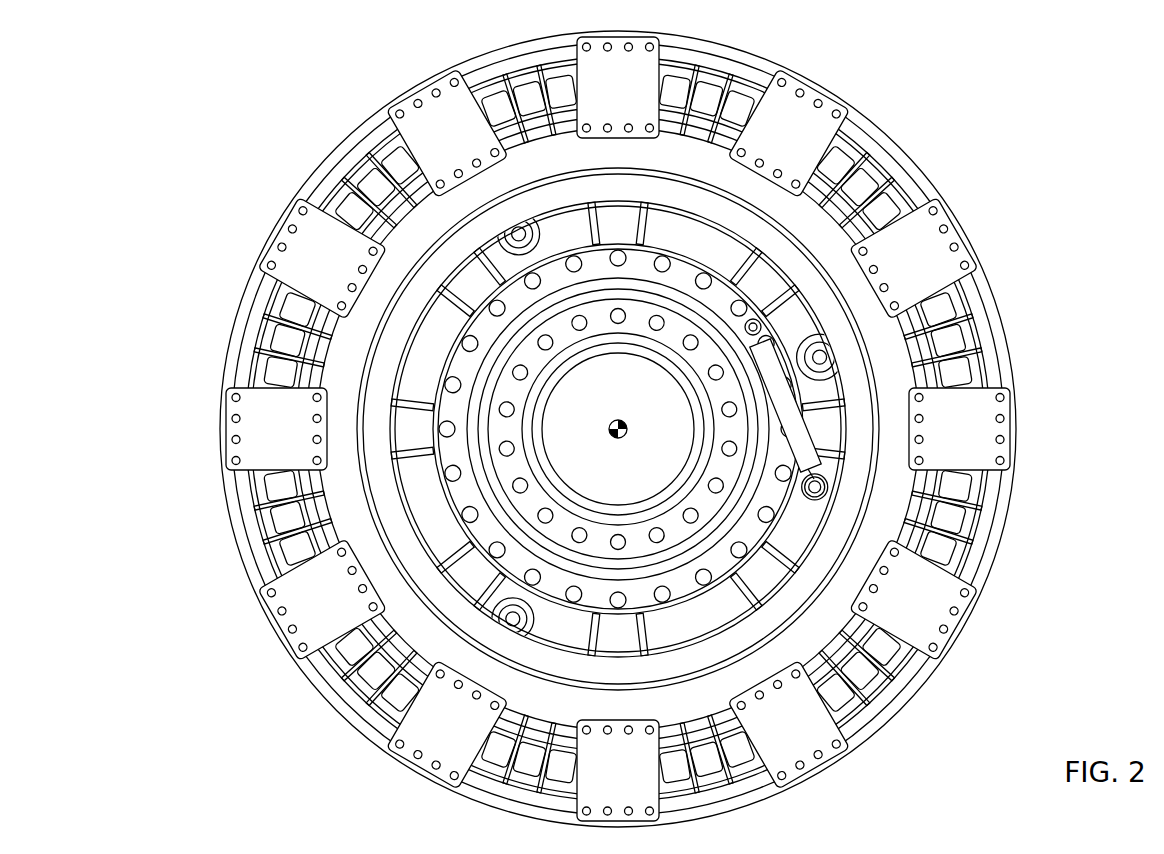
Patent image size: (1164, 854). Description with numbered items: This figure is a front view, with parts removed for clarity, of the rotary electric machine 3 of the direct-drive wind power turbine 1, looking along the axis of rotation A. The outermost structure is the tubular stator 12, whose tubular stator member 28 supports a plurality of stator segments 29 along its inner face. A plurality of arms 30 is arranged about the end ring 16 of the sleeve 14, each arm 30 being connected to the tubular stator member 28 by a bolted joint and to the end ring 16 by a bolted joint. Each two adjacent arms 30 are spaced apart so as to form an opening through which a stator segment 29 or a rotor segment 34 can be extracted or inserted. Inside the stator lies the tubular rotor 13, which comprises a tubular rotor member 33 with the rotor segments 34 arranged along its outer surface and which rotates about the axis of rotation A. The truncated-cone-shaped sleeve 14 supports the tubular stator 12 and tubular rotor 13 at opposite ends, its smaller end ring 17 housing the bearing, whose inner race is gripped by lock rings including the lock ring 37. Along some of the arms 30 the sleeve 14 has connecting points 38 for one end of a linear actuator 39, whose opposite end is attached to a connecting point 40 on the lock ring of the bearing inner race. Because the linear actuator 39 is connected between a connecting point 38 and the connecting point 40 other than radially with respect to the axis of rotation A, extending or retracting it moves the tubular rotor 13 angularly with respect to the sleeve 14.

The wind power turbine 1 is at (996, 106).
The rotary electric machine 3 is at (990, 165).
The tubular stator 12 is at (929, 697).
The tubular rotor 13 is at (618, 429).
The sleeve 14 is at (687, 668).
The end ring 16 is at (340, 449).
The end ring 17 is at (733, 247).
The tubular stator member 28 is at (247, 328).
The stator segments 29 is at (840, 145).
The arms 30 is at (616, 107).
The tubular rotor member 33 is at (378, 232).
The rotor segments 34 is at (517, 110).
The lock ring 37 is at (642, 313).
The connecting points 38 is at (495, 262).
The linear actuator 39 is at (770, 383).
The connecting point 40 is at (755, 320).
The axis of rotation A is at (628, 424).